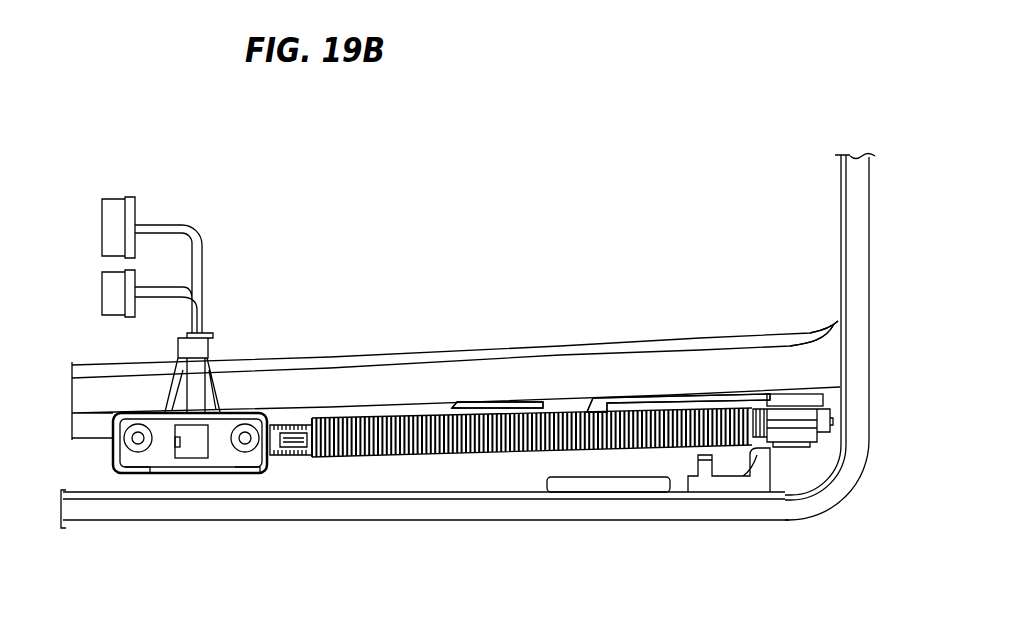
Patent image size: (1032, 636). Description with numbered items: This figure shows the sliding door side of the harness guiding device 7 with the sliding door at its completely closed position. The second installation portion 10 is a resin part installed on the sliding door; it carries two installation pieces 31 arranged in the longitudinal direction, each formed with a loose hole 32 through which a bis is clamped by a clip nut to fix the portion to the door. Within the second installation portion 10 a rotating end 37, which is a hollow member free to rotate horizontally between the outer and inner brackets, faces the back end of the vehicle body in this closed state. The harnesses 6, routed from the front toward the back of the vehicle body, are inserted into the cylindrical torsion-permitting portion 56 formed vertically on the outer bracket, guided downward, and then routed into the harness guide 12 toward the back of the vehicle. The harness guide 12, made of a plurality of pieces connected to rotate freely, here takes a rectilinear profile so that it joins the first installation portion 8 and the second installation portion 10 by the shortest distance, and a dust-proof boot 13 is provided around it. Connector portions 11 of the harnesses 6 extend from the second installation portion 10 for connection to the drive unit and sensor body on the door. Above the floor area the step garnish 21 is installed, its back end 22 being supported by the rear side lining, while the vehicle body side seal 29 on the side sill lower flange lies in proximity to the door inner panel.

The harnesses 6 is at (178, 287).
The guiding device 7 is at (435, 403).
The first installation portion 8 is at (833, 386).
The second installation portion 10 is at (148, 471).
The connector portions 11 is at (107, 287).
The harness guide 12 is at (611, 403).
The dust-proof boot 13 is at (607, 413).
The step garnish 21 is at (362, 358).
The back end 22 is at (827, 325).
The vehicle body side seal 29 is at (862, 213).
The installation pieces 31 is at (130, 471).
The loose hole 32 is at (133, 437).
The rotating end 37 is at (758, 400).
The torsion-permitting portion 56 is at (202, 368).